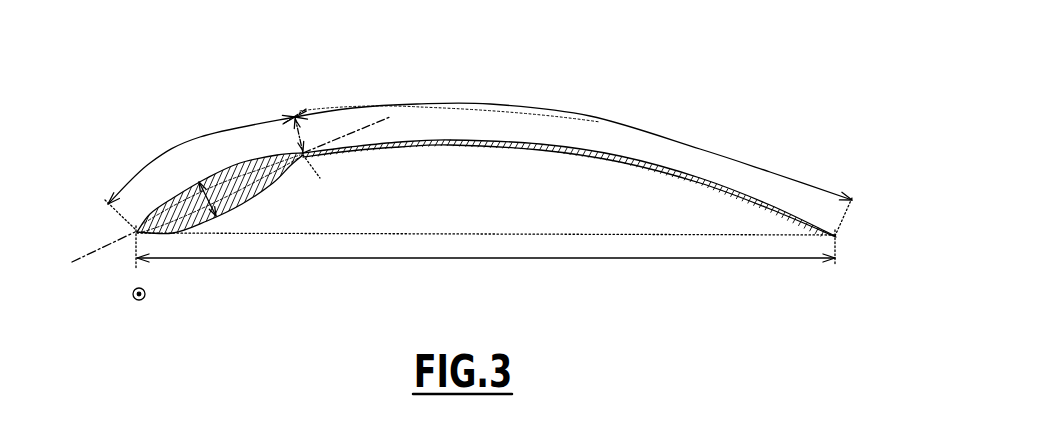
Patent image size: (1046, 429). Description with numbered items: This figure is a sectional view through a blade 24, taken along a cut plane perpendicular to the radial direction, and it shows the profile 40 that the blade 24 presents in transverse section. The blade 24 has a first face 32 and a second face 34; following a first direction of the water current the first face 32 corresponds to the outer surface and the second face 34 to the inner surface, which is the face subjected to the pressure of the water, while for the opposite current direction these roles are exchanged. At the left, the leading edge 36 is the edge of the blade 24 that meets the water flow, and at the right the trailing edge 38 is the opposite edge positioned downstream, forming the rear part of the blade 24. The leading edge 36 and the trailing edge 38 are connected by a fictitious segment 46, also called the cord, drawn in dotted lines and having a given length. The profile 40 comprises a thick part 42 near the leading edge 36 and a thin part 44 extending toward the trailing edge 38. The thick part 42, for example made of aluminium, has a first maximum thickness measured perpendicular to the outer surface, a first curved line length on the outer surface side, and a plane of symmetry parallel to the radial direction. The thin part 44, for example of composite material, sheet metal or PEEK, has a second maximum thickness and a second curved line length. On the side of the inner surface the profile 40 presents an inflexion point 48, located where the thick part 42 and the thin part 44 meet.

The blade 24 is at (478, 168).
The first face 32 is at (470, 124).
The second face 34 is at (452, 166).
The leading edge 36 is at (136, 233).
The trailing edge 38 is at (838, 238).
The profile 40 is at (158, 176).
The thick part 42 is at (231, 178).
The thin part 44 is at (522, 142).
The fictitious segment 46 is at (568, 238).
The inflexion point 48 is at (307, 158).